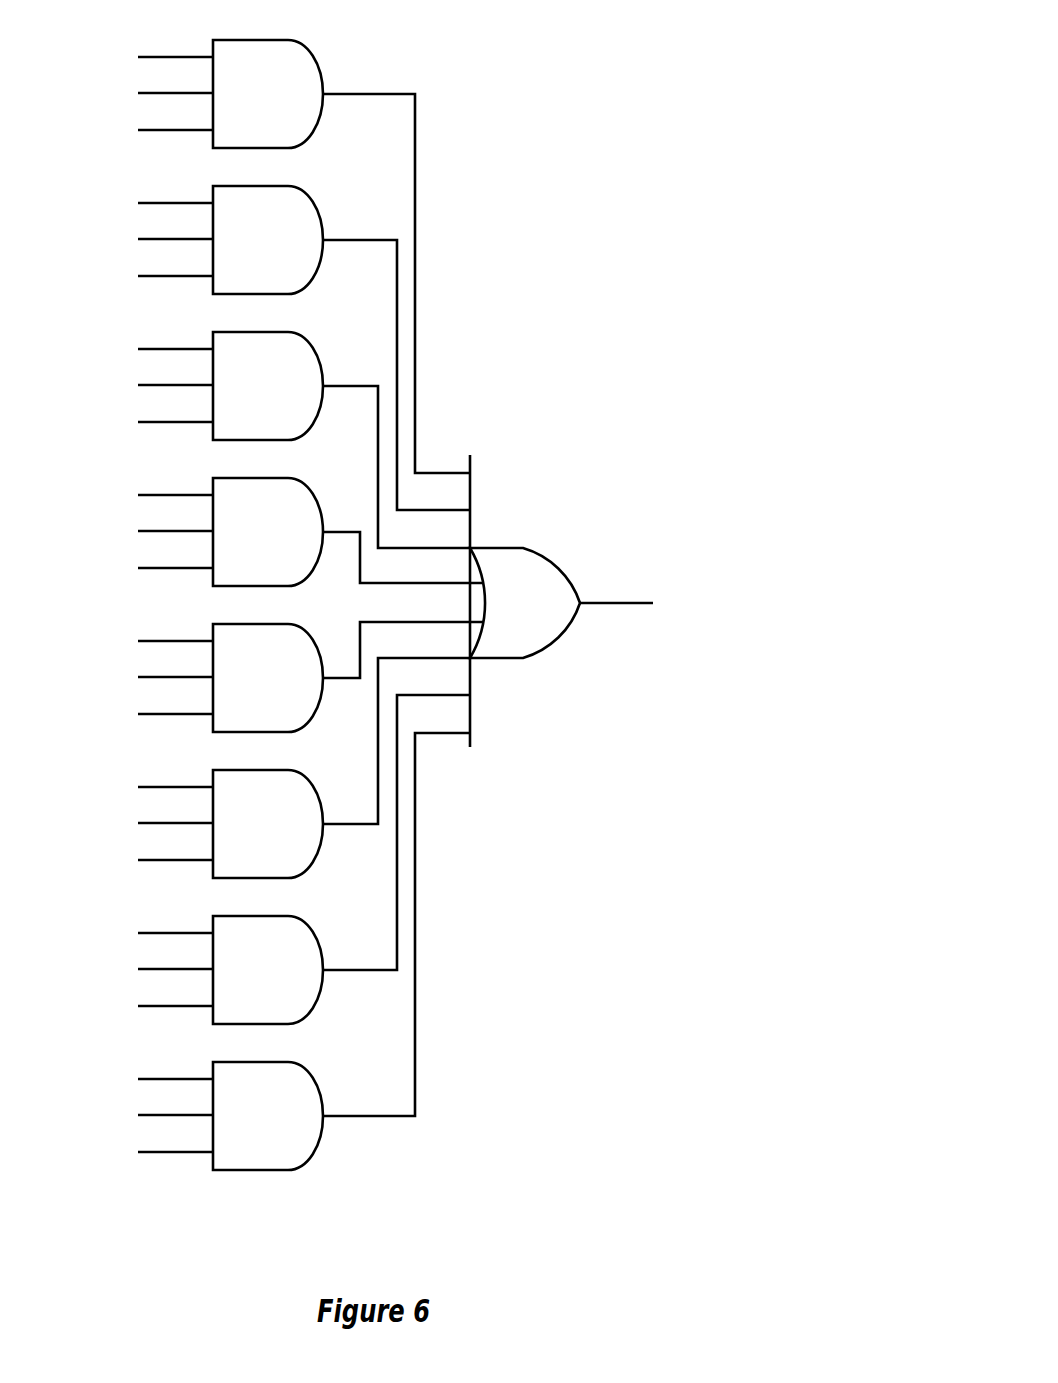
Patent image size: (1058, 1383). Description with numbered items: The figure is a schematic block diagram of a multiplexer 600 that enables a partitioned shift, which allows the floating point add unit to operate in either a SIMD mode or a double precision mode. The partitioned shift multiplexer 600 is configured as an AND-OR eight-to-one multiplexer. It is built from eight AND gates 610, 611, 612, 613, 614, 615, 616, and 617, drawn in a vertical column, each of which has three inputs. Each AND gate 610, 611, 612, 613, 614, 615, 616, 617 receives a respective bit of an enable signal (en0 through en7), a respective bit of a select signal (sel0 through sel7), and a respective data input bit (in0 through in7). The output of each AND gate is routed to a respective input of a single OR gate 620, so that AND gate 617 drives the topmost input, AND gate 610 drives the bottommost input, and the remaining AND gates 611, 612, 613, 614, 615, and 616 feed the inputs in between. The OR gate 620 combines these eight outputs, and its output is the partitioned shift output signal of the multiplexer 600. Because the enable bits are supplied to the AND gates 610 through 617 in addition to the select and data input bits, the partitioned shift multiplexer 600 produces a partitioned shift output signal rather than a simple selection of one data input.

The multiplexer 600 is at (671, 40).
The AND gate 610 is at (266, 1170).
The AND gate 611 is at (266, 1024).
The AND gate 612 is at (266, 878).
The AND gate 613 is at (266, 732).
The AND gate 614 is at (266, 586).
The AND gate 615 is at (266, 440).
The AND gate 616 is at (266, 294).
The AND gate 617 is at (266, 148).
The OR gate 620 is at (523, 545).